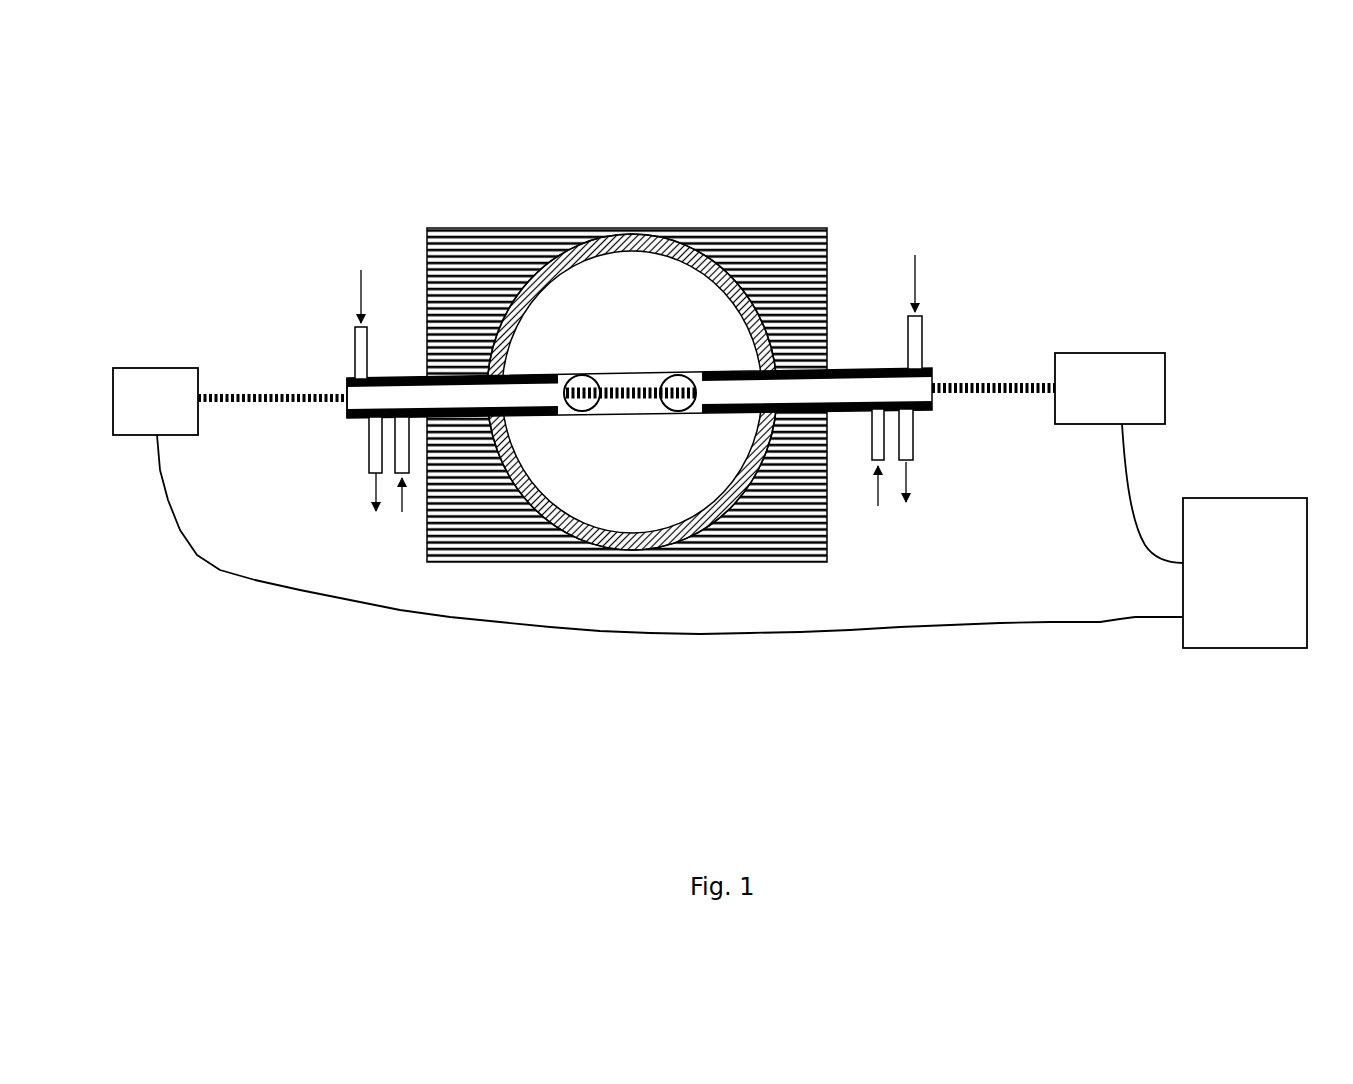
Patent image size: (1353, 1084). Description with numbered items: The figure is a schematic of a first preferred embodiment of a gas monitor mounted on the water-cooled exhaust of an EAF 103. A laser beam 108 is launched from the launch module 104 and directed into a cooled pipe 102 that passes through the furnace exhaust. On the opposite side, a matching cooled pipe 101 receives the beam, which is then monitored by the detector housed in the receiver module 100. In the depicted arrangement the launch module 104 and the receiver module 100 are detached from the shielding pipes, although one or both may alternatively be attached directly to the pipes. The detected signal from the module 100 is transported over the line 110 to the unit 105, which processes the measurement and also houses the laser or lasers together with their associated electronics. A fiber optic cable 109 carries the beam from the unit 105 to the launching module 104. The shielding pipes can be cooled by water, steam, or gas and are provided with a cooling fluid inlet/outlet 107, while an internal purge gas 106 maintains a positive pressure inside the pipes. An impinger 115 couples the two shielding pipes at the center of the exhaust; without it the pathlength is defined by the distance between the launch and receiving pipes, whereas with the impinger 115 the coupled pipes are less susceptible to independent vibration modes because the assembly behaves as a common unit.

The module 100 is at (1128, 353).
The cooled pipe 101 is at (932, 364).
The cooled pipe 102 is at (350, 423).
The EAF 103 is at (625, 230).
The module 104 is at (127, 368).
The unit 105 is at (1243, 498).
The internal purge gas 106 is at (361, 270).
The cooling fluid inlet/outlet 107 is at (395, 520).
The laser beam 108 is at (982, 398).
The fiber optic cable 109 is at (985, 628).
The source control line 110 is at (1132, 472).
The impinger 115 is at (628, 372).